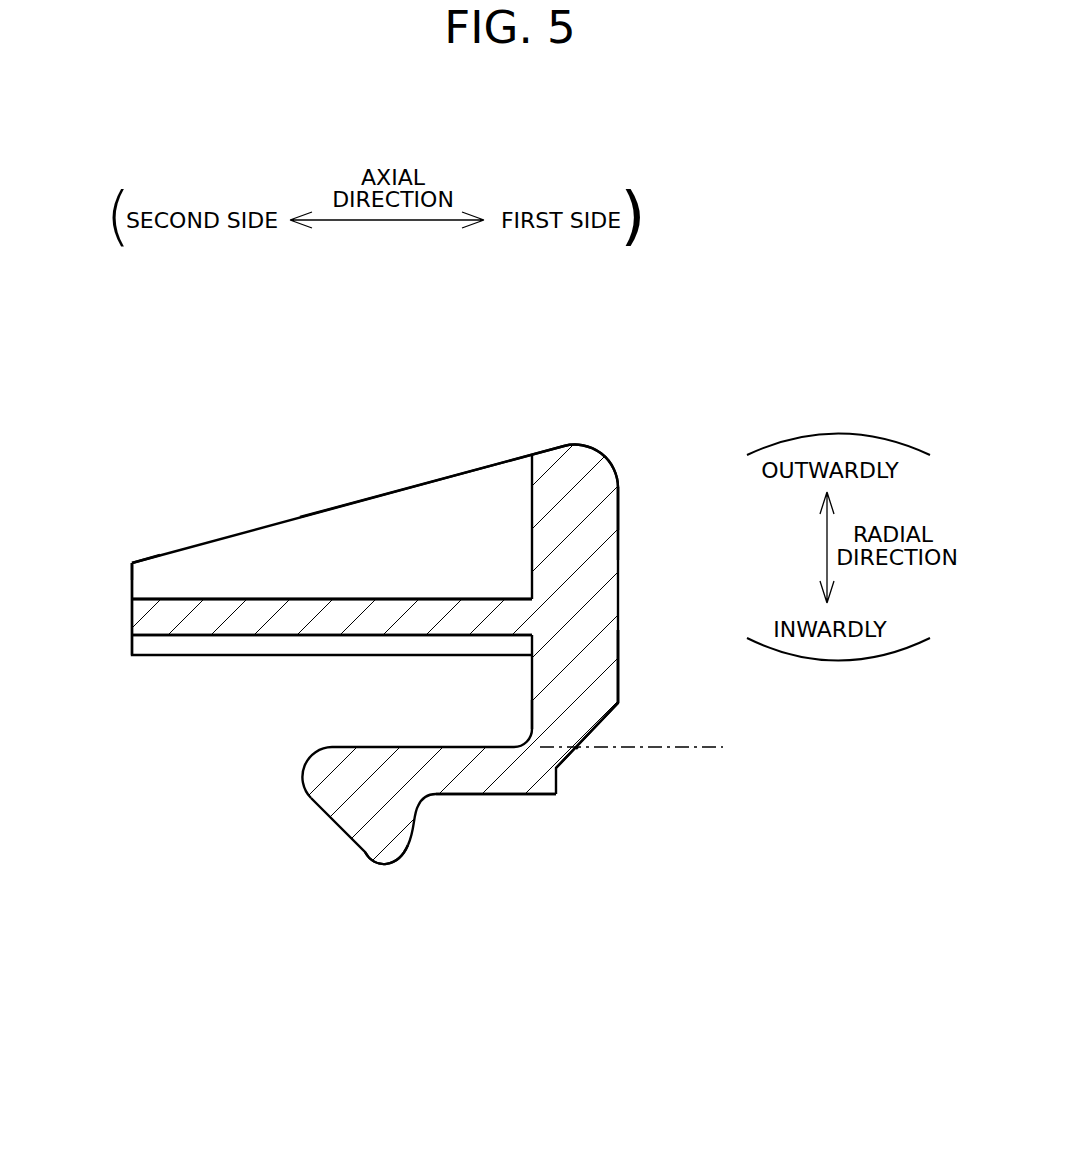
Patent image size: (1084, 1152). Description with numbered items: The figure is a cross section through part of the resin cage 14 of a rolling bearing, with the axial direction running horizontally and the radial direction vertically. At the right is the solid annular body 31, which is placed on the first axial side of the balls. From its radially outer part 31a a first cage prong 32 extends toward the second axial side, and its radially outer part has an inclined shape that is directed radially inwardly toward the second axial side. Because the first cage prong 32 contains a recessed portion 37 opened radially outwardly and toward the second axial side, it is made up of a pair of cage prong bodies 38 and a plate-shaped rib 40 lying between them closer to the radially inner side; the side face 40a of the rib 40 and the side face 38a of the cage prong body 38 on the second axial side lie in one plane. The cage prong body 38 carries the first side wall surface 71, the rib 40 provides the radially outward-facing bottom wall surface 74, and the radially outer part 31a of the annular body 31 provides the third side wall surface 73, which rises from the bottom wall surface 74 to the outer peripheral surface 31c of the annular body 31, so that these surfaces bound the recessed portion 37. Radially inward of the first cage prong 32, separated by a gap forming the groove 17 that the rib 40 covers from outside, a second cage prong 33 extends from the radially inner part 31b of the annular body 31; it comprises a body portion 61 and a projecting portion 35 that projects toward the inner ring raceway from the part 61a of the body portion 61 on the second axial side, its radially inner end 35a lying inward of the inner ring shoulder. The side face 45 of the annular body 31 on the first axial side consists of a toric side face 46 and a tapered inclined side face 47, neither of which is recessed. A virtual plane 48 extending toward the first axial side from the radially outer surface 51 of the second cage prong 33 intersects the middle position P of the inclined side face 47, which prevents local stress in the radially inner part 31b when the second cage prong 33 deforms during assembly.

The cage 14 is at (624, 460).
The groove 17 is at (340, 690).
The annular body 31 is at (620, 580).
The radially outer part 31a is at (582, 514).
The radially inner part 31b is at (545, 783).
The outer peripheral surface 31c is at (568, 444).
The first cage prong 32 is at (124, 548).
The second cage prong 33 is at (300, 777).
The projecting portion 35 is at (342, 822).
The radially inner end 35a is at (382, 867).
The recessed portion 37 is at (461, 500).
The cage prong body 38 is at (228, 553).
The side face 38a is at (130, 582).
The rib 40 is at (273, 612).
The side face 40a is at (130, 617).
The side face 45 is at (705, 636).
The toric side face 46 is at (620, 652).
The inclined side face 47 is at (606, 724).
The virtual plane 48 is at (675, 752).
The radially outer surface 51 is at (457, 748).
The body portion 61 is at (420, 765).
The part on the second side in the axial direction 61a is at (352, 771).
The first side wall surface 71 is at (399, 515).
The third side wall surface 73 is at (528, 508).
The bottom wall surface 74 is at (330, 598).
The middle position P is at (578, 747).